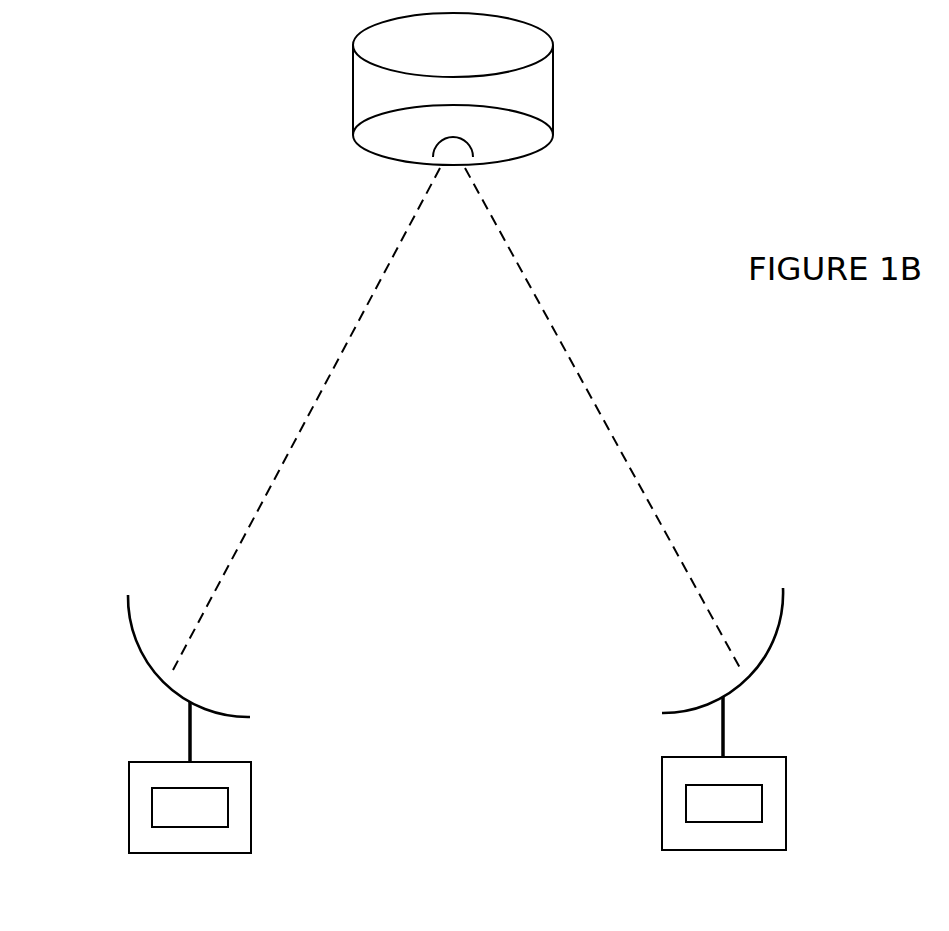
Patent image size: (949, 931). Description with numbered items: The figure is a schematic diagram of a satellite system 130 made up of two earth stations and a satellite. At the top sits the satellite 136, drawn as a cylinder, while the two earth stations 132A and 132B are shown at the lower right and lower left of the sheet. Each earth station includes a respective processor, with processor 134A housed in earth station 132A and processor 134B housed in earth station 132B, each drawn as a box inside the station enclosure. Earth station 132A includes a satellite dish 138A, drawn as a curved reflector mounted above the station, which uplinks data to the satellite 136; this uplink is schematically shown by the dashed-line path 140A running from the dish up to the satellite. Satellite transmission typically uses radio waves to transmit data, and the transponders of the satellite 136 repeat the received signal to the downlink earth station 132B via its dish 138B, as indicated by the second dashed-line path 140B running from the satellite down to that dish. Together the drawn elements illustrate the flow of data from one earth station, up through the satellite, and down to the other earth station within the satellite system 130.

The satellite system 130 is at (724, 159).
The satellite 136 is at (439, 53).
The dashed-line path 140A is at (643, 498).
The dashed-line path 140B is at (263, 502).
The satellite dish 138A is at (768, 653).
The dish 138B is at (152, 670).
The earth station 132A is at (662, 787).
The earth station 132B is at (251, 777).
The processor 134A is at (699, 813).
The processor 134B is at (166, 818).